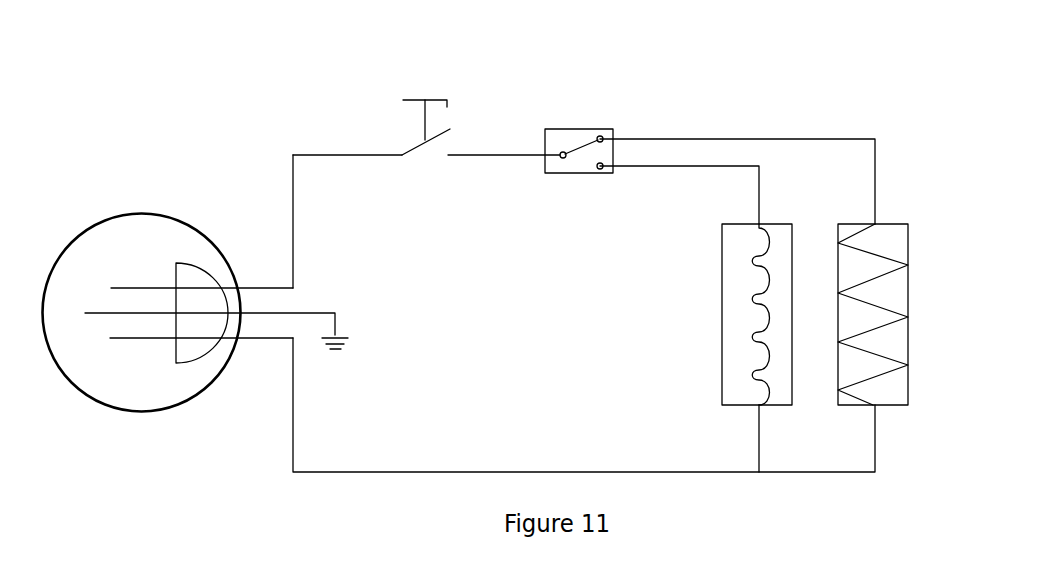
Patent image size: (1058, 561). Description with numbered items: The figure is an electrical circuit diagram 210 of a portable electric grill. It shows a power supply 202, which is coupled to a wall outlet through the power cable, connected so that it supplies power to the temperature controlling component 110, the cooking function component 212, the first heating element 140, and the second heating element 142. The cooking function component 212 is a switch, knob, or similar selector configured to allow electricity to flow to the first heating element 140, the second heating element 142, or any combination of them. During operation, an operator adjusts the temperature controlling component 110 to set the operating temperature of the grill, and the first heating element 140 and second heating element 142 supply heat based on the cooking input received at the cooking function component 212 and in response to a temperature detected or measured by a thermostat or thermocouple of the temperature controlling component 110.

The electrical circuit diagram 210 is at (862, 106).
The power supply 202 is at (140, 213).
The temperature controlling component 110 is at (403, 97).
The cooking function component 212 is at (577, 129).
The second heating element 142 is at (748, 224).
The first heating element 140 is at (898, 224).